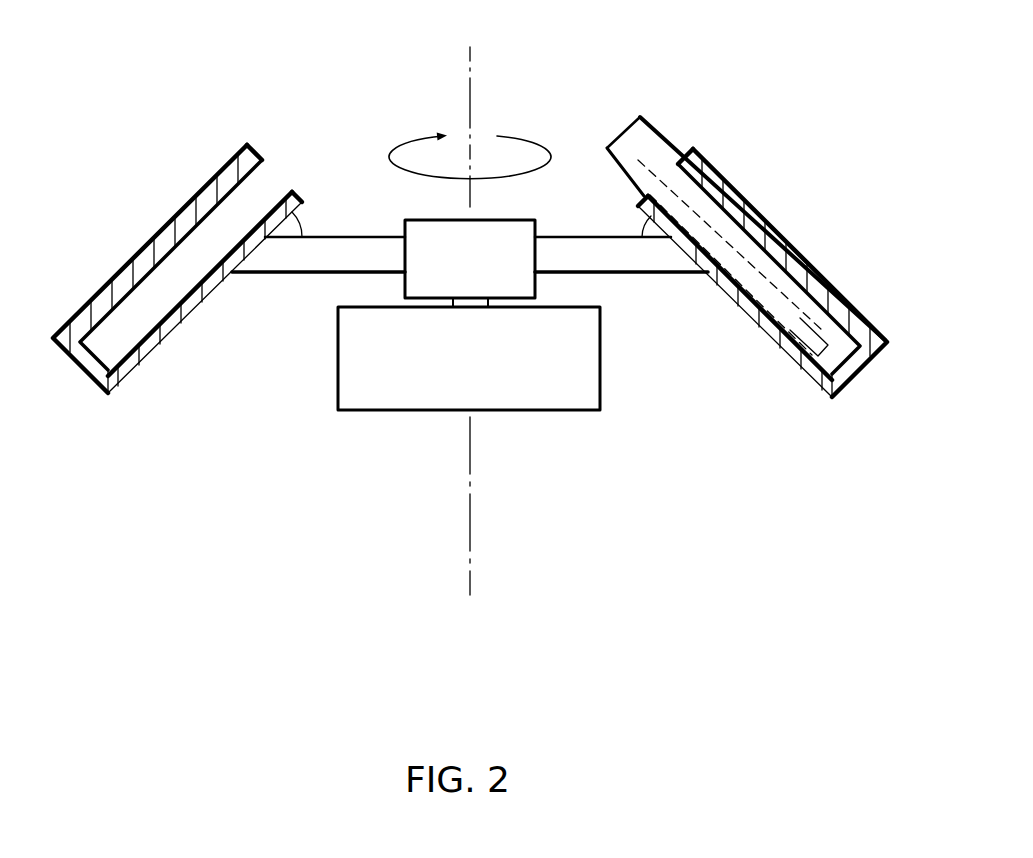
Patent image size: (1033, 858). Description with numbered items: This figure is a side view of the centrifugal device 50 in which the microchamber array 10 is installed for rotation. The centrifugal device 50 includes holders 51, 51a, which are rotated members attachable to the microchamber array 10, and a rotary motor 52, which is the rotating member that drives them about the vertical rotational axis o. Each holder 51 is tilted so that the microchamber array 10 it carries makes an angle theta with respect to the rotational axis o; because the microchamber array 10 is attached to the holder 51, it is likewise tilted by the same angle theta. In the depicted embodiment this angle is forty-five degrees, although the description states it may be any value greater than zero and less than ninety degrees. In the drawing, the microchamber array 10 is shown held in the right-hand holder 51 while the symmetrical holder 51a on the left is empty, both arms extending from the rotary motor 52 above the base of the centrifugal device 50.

The microchamber array 10 is at (633, 125).
The centrifugal device 50 is at (482, 623).
The holder 51 is at (707, 168).
The holder channel (left) 51a is at (228, 177).
The rotary motor 52 is at (550, 400).